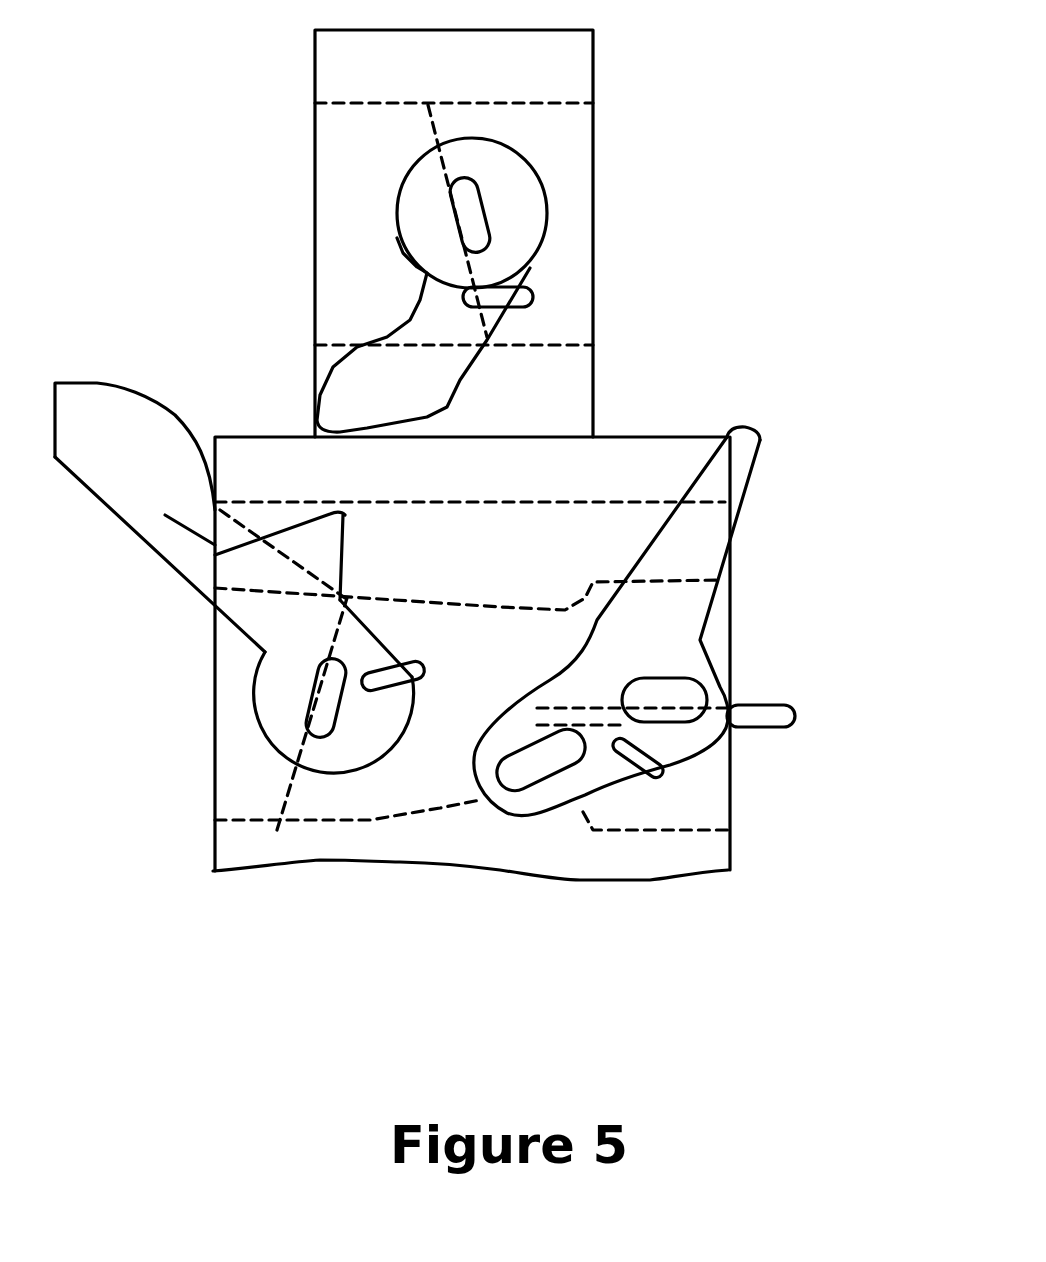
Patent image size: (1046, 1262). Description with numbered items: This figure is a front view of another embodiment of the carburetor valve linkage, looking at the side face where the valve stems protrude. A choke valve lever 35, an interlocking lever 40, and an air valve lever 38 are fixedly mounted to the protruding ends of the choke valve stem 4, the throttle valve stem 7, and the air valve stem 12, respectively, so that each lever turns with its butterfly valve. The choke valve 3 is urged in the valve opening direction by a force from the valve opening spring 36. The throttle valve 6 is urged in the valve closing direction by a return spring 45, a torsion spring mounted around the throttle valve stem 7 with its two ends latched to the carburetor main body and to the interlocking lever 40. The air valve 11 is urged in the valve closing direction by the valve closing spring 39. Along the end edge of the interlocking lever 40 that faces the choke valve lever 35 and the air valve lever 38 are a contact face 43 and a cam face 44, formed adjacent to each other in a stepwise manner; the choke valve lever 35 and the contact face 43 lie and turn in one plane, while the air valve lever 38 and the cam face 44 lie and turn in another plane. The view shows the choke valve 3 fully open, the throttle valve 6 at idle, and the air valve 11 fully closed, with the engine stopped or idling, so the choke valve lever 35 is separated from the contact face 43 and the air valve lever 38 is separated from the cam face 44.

The choke valve 3 is at (773, 727).
The choke valve stem 4 is at (690, 733).
The throttle valve 6 is at (283, 798).
The throttle valve stem 7 is at (330, 708).
The air valve 11 is at (457, 125).
The air valve stem 12 is at (490, 207).
The choke valve lever 35 is at (713, 520).
The valve opening spring 36 is at (700, 745).
The air valve lever 38 is at (410, 200).
The valve closing spring 39 is at (532, 288).
The interlocking lever 40 is at (167, 515).
The contact face 43 is at (345, 515).
The cam face 44 is at (137, 387).
The return spring 45 is at (372, 690).